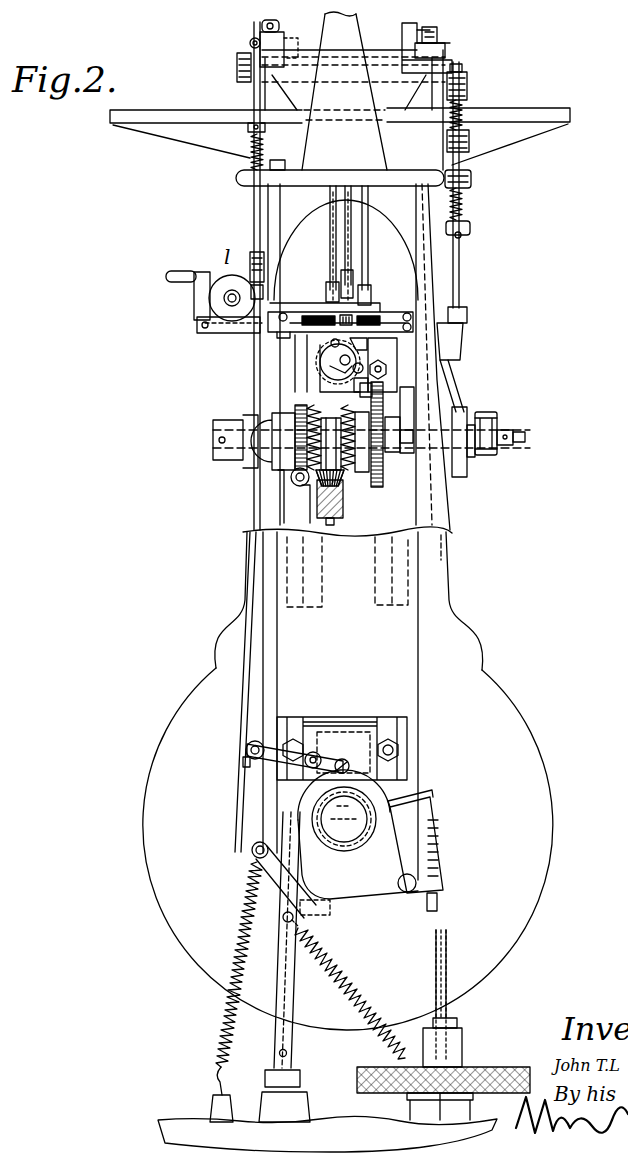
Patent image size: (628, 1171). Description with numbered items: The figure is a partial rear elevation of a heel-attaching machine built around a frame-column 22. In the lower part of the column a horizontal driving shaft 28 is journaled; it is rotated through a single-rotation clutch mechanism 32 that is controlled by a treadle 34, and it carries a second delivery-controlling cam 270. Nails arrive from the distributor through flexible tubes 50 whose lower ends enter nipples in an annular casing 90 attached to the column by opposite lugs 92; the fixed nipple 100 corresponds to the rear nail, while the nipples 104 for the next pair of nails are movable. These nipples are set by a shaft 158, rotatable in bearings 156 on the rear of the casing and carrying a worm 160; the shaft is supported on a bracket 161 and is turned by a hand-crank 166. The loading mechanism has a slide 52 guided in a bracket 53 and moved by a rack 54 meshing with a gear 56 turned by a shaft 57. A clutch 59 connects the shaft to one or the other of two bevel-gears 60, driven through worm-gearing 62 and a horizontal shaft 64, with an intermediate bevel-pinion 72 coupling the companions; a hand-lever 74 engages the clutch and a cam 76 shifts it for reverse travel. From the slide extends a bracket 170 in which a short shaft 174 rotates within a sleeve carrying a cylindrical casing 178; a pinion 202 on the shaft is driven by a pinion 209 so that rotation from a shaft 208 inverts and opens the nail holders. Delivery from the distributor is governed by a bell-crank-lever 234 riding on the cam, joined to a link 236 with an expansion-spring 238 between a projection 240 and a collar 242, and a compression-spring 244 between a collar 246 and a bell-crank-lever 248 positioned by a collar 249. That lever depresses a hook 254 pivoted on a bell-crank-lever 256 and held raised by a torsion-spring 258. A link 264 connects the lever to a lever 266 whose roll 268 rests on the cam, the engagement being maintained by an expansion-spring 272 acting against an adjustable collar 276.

The frame-column 22 is at (452, 556).
The horizontal driving shaft 28 is at (347, 830).
The single-rotation clutch mechanism 32 is at (377, 800).
The treadle 34 is at (473, 1063).
The flexible tubes 50 is at (357, 222).
The slide 52 is at (388, 370).
The bracket 53 is at (400, 358).
The rack 54 is at (370, 386).
The gear 56 is at (378, 488).
The shaft 57 is at (214, 458).
The clutch 59 is at (342, 472).
The bevel-gears 60 is at (310, 435).
The worm-gearing 62 is at (298, 480).
The horizontal shaft 64 is at (306, 484).
The intermediate bevel-pinion 72 is at (311, 502).
The hand-lever 74 is at (488, 413).
The cam 76 is at (468, 470).
The annular casing 90 is at (304, 310).
The lugs 92 is at (411, 319).
The nipple 100 is at (346, 285).
The nipples 104 is at (332, 292).
The bearings 156 is at (386, 318).
The shaft 158 is at (194, 328).
The worm 160 is at (367, 341).
The bracket 161 is at (236, 334).
The hand-crank 166 is at (198, 290).
The bracket 170 is at (328, 375).
The short shaft 174 is at (334, 352).
The cylindrical casing 178 is at (332, 363).
The pinion 202 is at (353, 370).
The shaft 208 is at (351, 391).
The pinion 209 is at (323, 342).
The bell-crank-lever 234 is at (453, 393).
The link 236 is at (460, 276).
The expansion-spring 238 is at (466, 200).
The projection 240 is at (471, 178).
The collar 242 is at (470, 228).
The compression-spring 244 is at (464, 108).
The collar 246 is at (469, 140).
The bell-crank-lever 248 is at (440, 33).
The collar 249 is at (468, 84).
The hook 254 is at (438, 22).
The bell-crank-lever 256 is at (249, 42).
The torsion-spring 258 is at (425, 22).
The link 264 is at (252, 203).
The lever 266 is at (307, 768).
The roll 268 is at (350, 770).
The second delivery-controlling cam 270 is at (393, 840).
The expansion-spring 272 is at (250, 150).
The adjustable collar 276 is at (247, 128).